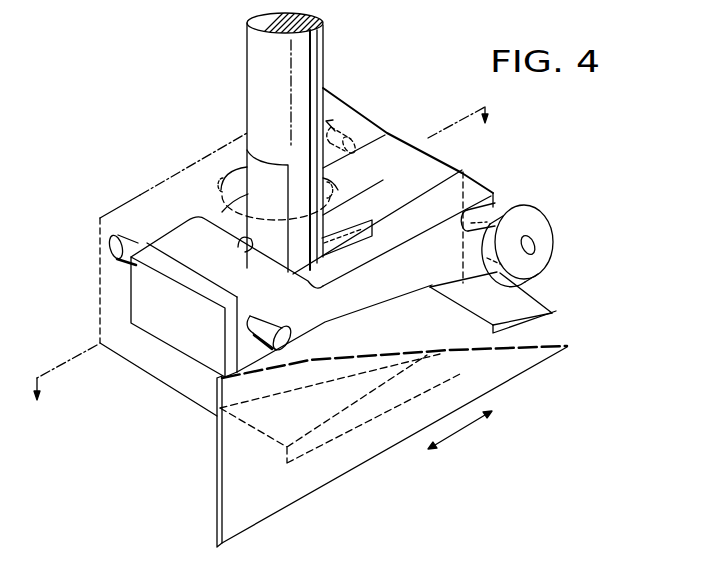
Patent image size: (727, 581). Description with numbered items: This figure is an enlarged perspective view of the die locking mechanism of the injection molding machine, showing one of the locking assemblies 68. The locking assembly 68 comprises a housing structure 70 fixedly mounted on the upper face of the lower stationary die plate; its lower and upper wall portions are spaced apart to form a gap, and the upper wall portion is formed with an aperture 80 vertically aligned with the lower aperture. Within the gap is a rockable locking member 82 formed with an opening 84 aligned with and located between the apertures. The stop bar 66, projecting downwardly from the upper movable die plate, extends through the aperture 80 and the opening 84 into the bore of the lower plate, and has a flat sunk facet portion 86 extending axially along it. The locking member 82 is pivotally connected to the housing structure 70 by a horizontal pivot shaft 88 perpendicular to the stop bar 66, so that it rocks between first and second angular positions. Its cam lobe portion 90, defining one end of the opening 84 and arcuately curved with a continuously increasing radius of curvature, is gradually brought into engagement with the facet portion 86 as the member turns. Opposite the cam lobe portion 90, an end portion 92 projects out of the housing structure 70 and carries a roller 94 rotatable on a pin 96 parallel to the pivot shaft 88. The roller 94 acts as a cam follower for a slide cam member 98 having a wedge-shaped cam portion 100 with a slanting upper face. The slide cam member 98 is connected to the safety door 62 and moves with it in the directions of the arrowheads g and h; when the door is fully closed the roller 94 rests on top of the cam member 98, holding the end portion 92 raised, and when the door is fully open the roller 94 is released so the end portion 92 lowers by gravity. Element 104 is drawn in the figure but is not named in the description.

The safety door 62 is at (216, 480).
The stop bar 66 is at (247, 50).
The locking assembly 68 is at (413, 62).
The housing structure 70 is at (139, 193).
The aperture 80 is at (224, 179).
The rockable locking member 82 is at (193, 362).
The opening 84 is at (344, 220).
The flat sunk facet portion 86 is at (244, 138).
The pivot shaft 88 is at (302, 352).
The cam lobe portion 90 is at (238, 246).
The end portion 92 is at (383, 133).
The roller 94 is at (554, 228).
The pin 96 is at (498, 205).
The slide cam member 98 is at (337, 443).
The wedge-shaped cam portion 100 is at (547, 310).
The pin 104 is at (350, 124).